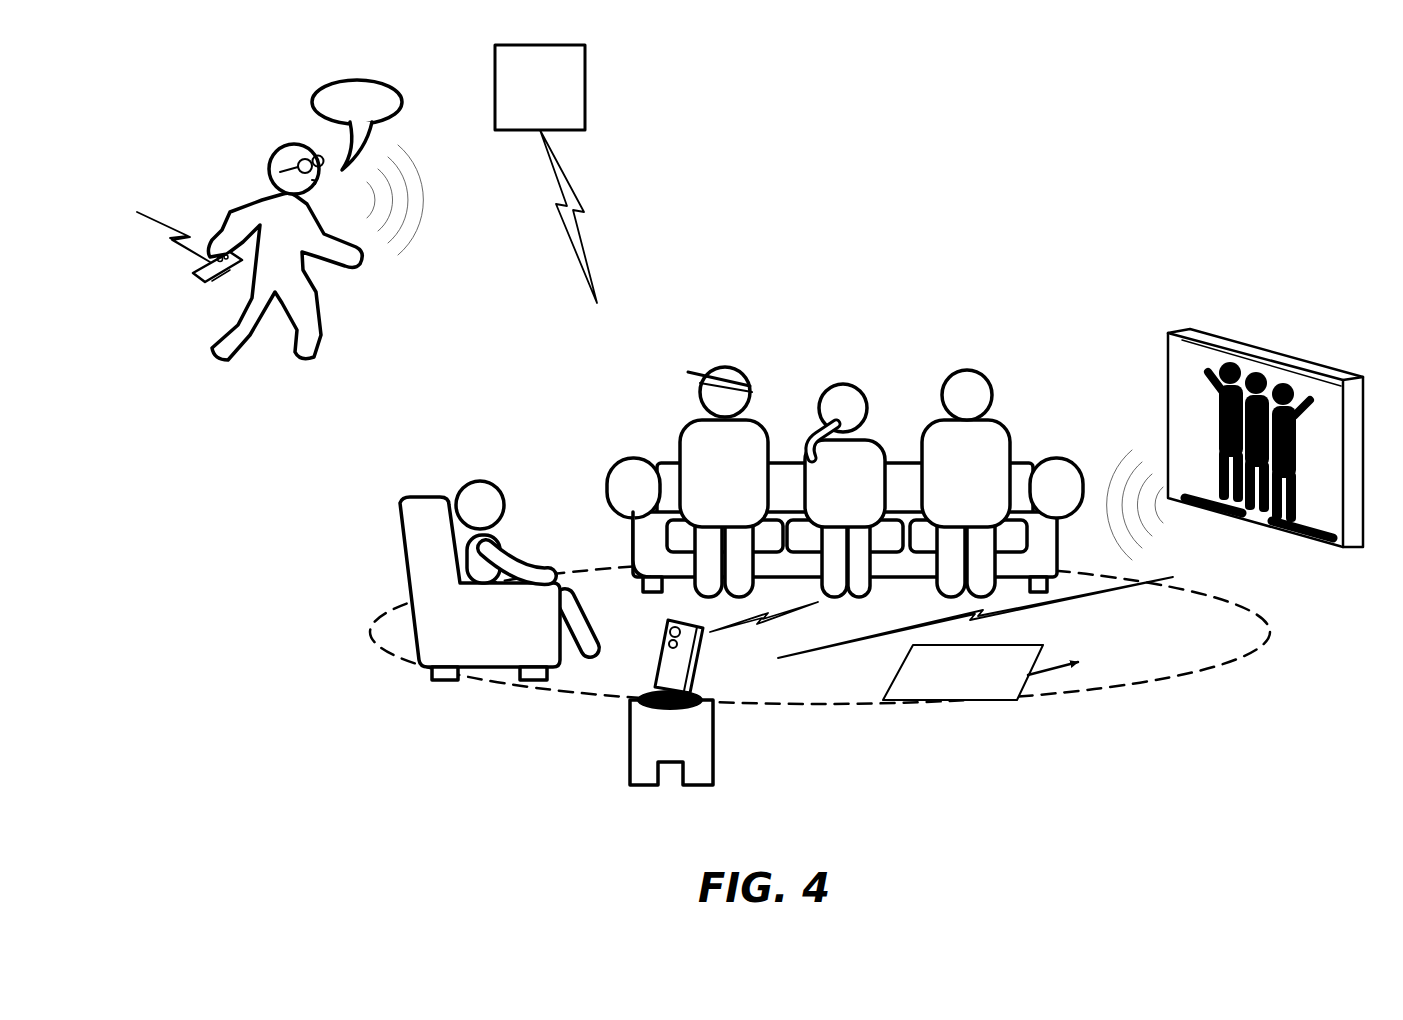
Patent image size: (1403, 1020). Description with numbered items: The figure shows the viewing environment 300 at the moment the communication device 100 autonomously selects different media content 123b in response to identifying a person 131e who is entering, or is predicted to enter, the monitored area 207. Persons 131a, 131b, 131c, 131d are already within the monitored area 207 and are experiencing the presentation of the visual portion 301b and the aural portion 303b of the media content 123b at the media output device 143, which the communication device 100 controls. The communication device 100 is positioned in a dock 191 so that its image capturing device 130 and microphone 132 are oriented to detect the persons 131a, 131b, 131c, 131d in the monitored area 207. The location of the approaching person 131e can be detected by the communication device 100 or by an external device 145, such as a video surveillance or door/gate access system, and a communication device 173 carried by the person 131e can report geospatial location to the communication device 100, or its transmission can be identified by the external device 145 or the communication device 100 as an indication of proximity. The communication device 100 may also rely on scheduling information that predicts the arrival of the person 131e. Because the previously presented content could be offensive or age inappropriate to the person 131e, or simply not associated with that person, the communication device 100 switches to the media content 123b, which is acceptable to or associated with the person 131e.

The person 131a is at (587, 658).
The person 131b is at (693, 440).
The person 131c is at (815, 440).
The person 131d is at (930, 430).
The person 131e is at (230, 214).
The communication device 173 is at (205, 292).
The external device 145 is at (546, 174).
The viewing environment 300 is at (541, 440).
The aural portion 303b is at (1128, 448).
The visual portion 301b is at (1177, 353).
The media output device 143 is at (1221, 408).
The communication device 100 is at (703, 640).
The dock 191 is at (710, 705).
The image capturing device 130 is at (663, 640).
The microphone 132 is at (638, 700).
The monitored area 207 is at (1052, 688).
The media content 123b is at (980, 672).